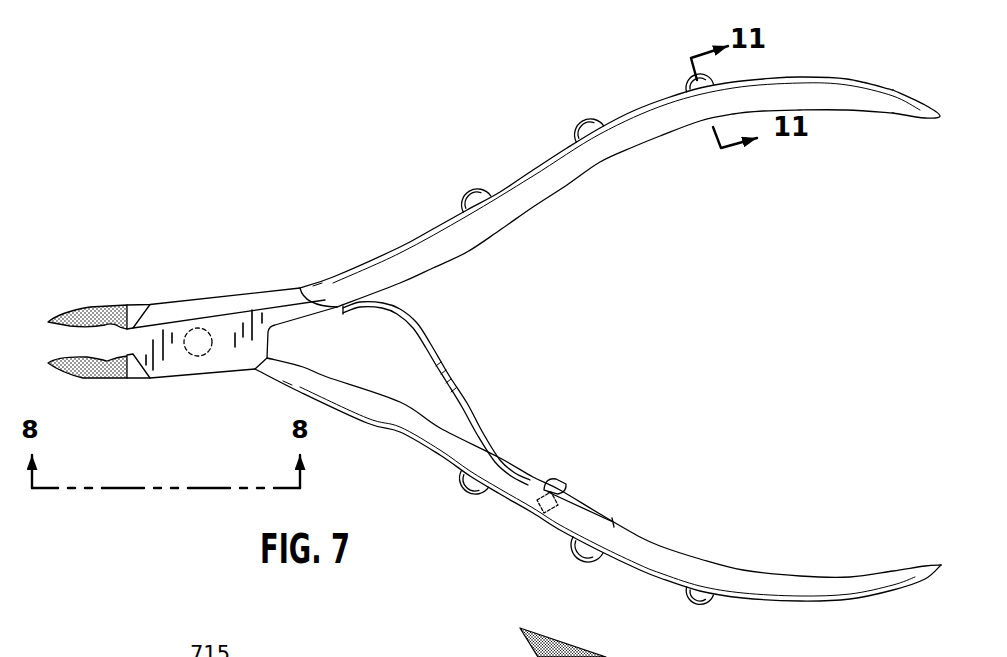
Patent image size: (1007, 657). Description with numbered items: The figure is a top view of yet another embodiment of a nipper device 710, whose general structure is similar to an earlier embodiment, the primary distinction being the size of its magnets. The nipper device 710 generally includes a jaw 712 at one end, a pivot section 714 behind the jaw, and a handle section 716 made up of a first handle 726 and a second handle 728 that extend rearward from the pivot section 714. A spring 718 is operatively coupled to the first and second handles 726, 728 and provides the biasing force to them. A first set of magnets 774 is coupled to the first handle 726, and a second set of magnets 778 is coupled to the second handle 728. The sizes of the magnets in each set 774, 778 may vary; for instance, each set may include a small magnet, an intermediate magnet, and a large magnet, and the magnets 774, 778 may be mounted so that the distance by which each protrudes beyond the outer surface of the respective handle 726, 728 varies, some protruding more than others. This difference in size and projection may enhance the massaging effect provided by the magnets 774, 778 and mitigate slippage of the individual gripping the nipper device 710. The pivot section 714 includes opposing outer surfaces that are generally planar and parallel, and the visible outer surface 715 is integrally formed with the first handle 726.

The nipper device 710 is at (494, 331).
The jaw 712 is at (83, 296).
The pivot section 714 is at (193, 302).
The outer surface 715 is at (172, 372).
The handle section 716 is at (612, 101).
The spring 718 is at (440, 344).
The first handle 726 is at (851, 103).
The second handle 728 is at (746, 572).
The first set of magnets 774 is at (471, 190).
The second set of magnets 778 is at (477, 497).